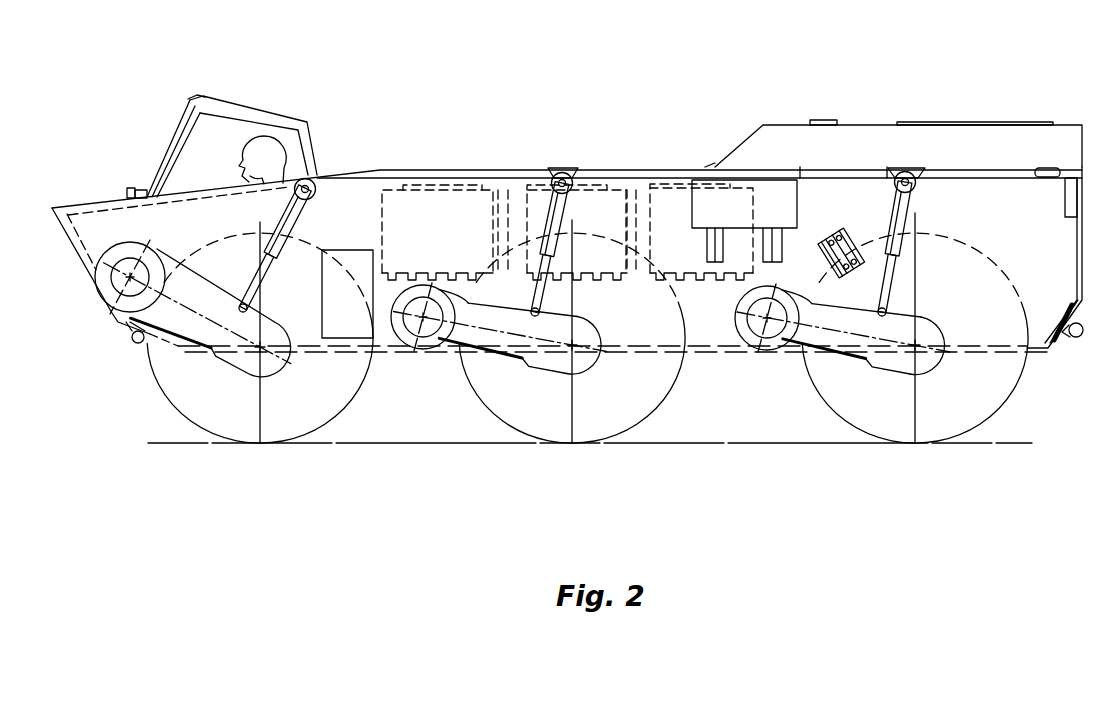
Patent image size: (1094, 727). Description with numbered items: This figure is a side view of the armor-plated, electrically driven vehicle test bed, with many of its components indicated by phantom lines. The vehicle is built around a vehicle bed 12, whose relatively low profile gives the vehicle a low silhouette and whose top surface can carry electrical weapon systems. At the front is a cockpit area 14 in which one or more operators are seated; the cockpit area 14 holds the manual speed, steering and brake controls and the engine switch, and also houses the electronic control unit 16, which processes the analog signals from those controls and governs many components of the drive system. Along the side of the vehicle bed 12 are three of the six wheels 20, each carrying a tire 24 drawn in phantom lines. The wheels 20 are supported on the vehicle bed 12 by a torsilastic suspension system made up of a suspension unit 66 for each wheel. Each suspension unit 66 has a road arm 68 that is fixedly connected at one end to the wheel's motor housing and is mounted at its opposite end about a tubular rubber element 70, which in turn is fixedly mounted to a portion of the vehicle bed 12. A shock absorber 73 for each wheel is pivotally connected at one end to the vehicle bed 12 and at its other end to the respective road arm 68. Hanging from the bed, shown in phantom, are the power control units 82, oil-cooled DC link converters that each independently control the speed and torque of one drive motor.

The vehicle bed 12 is at (968, 124).
The cockpit area 14 is at (240, 128).
The electronic control unit 16 is at (373, 250).
The wheels 20 is at (297, 448).
The tire 24 is at (160, 402).
The suspension unit 66 is at (193, 341).
The road arm 68 is at (236, 362).
The rubber element 70 is at (97, 284).
The shock absorber 73 is at (284, 232).
The power control unit 82 is at (427, 186).